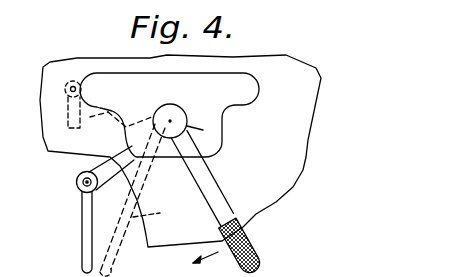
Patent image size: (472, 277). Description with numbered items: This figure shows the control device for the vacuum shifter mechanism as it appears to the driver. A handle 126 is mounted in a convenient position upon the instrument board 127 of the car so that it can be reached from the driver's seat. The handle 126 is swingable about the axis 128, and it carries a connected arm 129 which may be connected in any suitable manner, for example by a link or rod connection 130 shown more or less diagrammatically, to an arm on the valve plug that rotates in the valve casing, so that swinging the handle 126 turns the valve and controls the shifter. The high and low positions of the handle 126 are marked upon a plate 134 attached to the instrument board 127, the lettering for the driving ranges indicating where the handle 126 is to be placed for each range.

The handle 126 is at (213, 211).
The instrument board 127 is at (316, 72).
The axis 128 is at (219, 131).
The arm 129 is at (113, 161).
The control rod 130 is at (82, 253).
The plate 134 is at (261, 95).